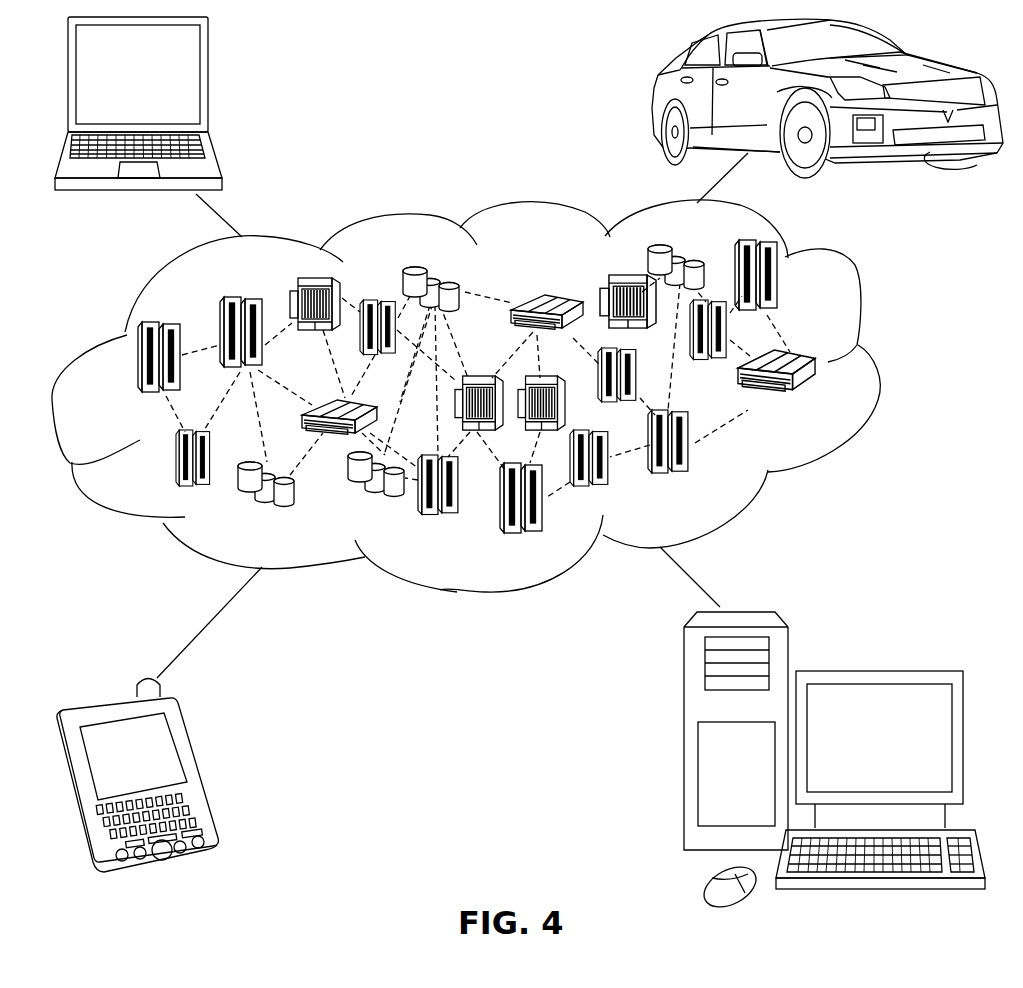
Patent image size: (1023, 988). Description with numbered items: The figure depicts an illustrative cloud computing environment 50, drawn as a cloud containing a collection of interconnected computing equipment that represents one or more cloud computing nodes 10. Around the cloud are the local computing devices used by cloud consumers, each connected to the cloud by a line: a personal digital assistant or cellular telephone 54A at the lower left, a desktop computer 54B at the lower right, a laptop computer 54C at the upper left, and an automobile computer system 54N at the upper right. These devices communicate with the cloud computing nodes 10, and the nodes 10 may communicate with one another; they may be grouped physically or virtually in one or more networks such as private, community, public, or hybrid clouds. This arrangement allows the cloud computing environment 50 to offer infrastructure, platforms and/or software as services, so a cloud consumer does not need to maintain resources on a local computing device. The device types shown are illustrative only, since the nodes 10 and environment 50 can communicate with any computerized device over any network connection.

The cloud computing node 10 is at (822, 400).
The cloud computing environment 50 is at (878, 367).
The personal digital assistant (PDA) or cellular telephone 54A is at (200, 770).
The desktop computer 54B is at (877, 672).
The laptop computer 54C is at (208, 82).
The automobile computer system 54N is at (655, 103).